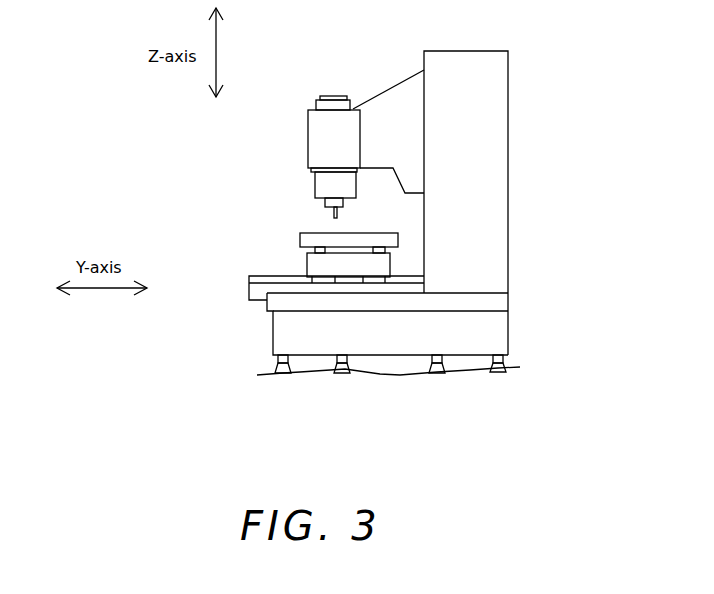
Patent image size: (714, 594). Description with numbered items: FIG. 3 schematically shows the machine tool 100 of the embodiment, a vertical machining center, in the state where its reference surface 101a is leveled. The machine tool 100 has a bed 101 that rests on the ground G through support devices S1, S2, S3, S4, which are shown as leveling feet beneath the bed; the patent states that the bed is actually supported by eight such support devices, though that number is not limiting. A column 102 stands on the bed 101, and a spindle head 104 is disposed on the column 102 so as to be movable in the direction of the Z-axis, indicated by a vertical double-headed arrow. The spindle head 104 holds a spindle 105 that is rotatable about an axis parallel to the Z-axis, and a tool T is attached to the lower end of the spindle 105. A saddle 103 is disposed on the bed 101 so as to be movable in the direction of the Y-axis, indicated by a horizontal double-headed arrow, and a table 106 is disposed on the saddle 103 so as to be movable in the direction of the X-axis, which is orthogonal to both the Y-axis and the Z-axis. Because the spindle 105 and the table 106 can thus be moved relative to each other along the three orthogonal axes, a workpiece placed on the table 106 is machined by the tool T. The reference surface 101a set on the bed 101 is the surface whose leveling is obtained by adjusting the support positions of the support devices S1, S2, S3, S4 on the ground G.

The machine tool 100 is at (600, 64).
The bed 101 is at (508, 320).
The reference surface 101a is at (257, 276).
The column 102 is at (500, 186).
The saddle 103 is at (307, 262).
The spindle head 104 is at (383, 92).
The spindle 105 is at (315, 182).
The table 106 is at (313, 233).
The tool T is at (338, 212).
The ground G is at (266, 372).
The support device S1 is at (272, 403).
The support device S2 is at (332, 402).
The support device S3 is at (425, 402).
The support device S4 is at (488, 399).